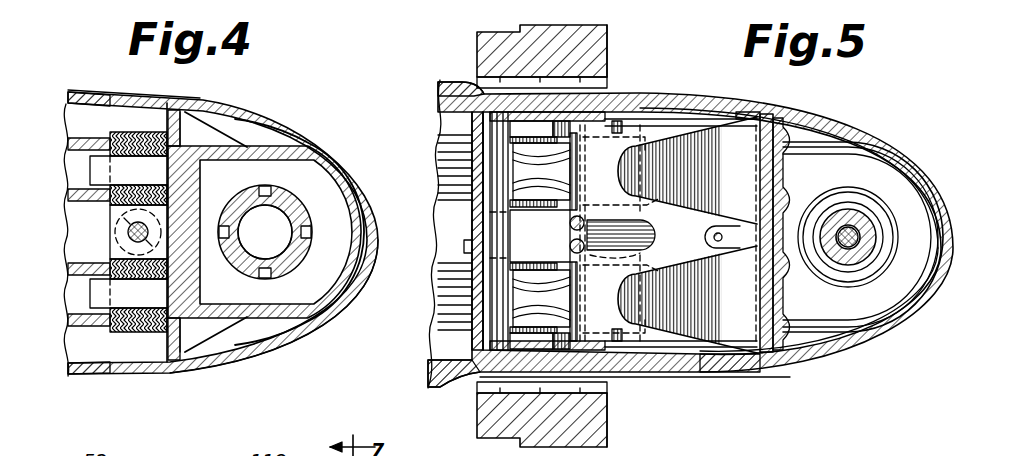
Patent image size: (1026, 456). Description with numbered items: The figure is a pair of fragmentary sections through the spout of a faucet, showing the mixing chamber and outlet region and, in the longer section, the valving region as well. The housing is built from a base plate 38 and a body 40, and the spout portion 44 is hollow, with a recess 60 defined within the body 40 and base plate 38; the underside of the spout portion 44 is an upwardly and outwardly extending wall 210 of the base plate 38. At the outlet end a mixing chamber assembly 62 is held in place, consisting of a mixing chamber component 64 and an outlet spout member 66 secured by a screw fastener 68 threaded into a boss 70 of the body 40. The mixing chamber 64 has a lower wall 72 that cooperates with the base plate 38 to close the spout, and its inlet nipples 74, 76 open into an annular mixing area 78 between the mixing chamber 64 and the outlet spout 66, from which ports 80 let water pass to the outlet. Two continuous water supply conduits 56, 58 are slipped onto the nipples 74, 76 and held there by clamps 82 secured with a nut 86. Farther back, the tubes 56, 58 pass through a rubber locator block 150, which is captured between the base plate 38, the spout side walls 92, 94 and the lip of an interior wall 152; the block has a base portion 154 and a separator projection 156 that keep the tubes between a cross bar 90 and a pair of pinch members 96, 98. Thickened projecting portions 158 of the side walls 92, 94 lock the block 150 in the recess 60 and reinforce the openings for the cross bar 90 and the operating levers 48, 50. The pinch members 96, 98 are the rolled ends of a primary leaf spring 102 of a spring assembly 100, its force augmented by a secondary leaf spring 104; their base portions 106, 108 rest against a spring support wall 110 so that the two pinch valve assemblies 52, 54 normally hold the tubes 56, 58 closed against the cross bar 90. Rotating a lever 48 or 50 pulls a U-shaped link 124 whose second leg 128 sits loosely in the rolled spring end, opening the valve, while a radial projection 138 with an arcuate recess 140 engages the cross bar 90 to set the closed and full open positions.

In FIG. 4, the base plate 38 is at (68, 142).
In FIG. 5, the base plate 38 is at (437, 127).
In FIG. 4, the body 40 is at (160, 373).
In FIG. 5, the body 40 is at (865, 353).
In FIG. 4, the spout portion 44 is at (266, 112).
In FIG. 5, the spout portion 44 is at (873, 133).
In FIG. 5, the operating lever 48 is at (607, 415).
In FIG. 5, the operating lever 50 is at (607, 45).
In FIG. 5, the pinch valve assembly 52 is at (617, 352).
In FIG. 5, the pinch valve assembly 54 is at (616, 121).
In FIG. 4, the water supply conduit 56 is at (78, 266).
In FIG. 5, the water supply conduit 56 is at (443, 293).
In FIG. 4, the water supply conduit 58 is at (92, 165).
In FIG. 5, the water supply conduit 58 is at (443, 168).
In FIG. 4, the recess 60 is at (66, 116).
In FIG. 5, the recess 60 is at (452, 108).
In FIG. 4, the mixing chamber assembly 62 is at (252, 338).
In FIG. 5, the mixing chamber assembly 62 is at (893, 325).
In FIG. 4, the mixing chamber component 64 is at (292, 143).
In FIG. 5, the mixing chamber component 64 is at (908, 290).
In FIG. 4, the outlet spout member 66 is at (290, 200).
In FIG. 5, the screw fastener 68 is at (853, 213).
In FIG. 5, the boss 70 is at (857, 257).
In FIG. 4, the lower wall 72 is at (216, 124).
In FIG. 5, the lower wall 72 is at (818, 125).
In FIG. 4, the inlet nipple 74 is at (94, 292).
In FIG. 4, the inlet nipple 76 is at (94, 174).
In FIG. 4, the annular mixing area 78 is at (287, 293).
In FIG. 4, the ports 80 is at (292, 232).
In FIG. 4, the clamps 82 is at (134, 128).
In FIG. 5, the clamps 82 is at (742, 100).
In FIG. 4, the nut 86 is at (128, 232).
In FIG. 5, the nut 86 is at (727, 215).
In FIG. 5, the cross bar 90 is at (615, 274).
In FIG. 4, the spout side wall 92 is at (93, 370).
In FIG. 5, the spout side wall 92 is at (430, 373).
In FIG. 4, the spout side wall 94 is at (86, 92).
In FIG. 5, the spout side wall 94 is at (438, 90).
In FIG. 5, the pinch member 96 is at (560, 290).
In FIG. 5, the pinch member 98 is at (562, 173).
In FIG. 5, the spring assembly 100 is at (660, 119).
In FIG. 5, the primary leaf spring member 102 is at (670, 347).
In FIG. 5, the secondary leaf spring 104 is at (703, 330).
In FIG. 5, the base portion 106 is at (783, 187).
In FIG. 5, the base portion 108 is at (763, 163).
In FIG. 5, the spring support wall 110 is at (753, 273).
In FIG. 5, the link member 124 is at (570, 246).
In FIG. 5, the second leg 128 is at (615, 235).
In FIG. 5, the radial projection 138 is at (477, 50).
In FIG. 5, the arcuate recess 140 is at (480, 82).
In FIG. 5, the locator block 150 is at (487, 215).
In FIG. 5, the interior wall 152 is at (470, 250).
In FIG. 5, the base portion 154 is at (640, 353).
In FIG. 5, the separator projection 156 is at (612, 228).
In FIG. 5, the projecting portions 158 is at (540, 118).
In FIG. 4, the wall 210 is at (162, 103).
In FIG. 5, the wall 210 is at (750, 367).